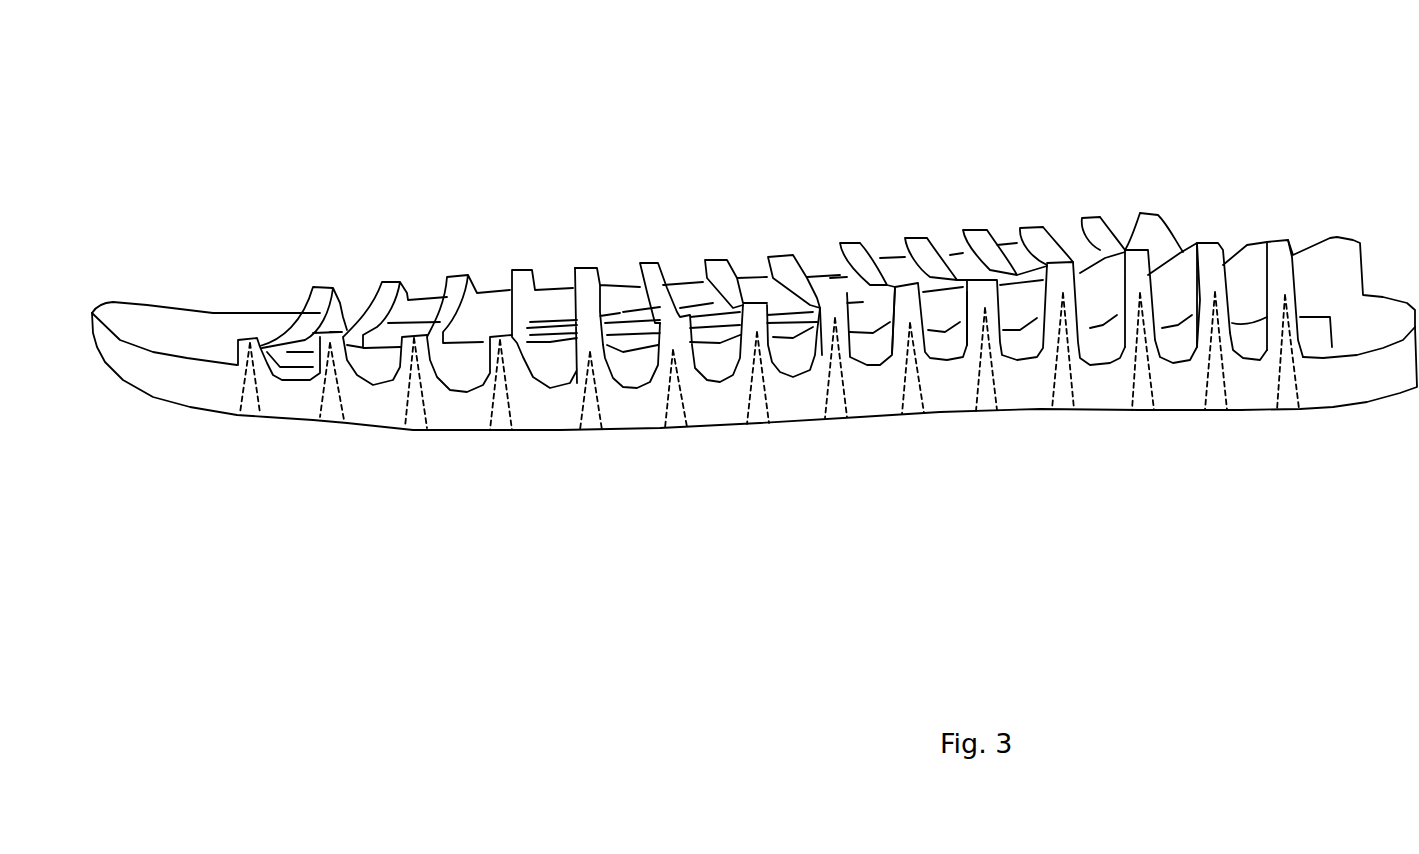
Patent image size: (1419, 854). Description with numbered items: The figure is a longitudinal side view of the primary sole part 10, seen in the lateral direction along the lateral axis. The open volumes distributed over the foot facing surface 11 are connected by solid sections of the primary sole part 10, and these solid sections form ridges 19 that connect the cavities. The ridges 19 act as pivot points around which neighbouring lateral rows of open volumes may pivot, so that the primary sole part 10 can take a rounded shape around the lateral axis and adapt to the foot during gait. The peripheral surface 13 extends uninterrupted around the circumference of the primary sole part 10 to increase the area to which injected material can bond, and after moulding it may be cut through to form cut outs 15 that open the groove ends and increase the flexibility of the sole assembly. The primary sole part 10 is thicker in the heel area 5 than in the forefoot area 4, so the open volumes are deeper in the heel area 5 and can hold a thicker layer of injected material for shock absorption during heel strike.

The forefoot area 4 is at (290, 510).
The heel area 5 is at (1217, 457).
The primary sole part 10 is at (1308, 45).
The foot facing surface 11 is at (175, 320).
The peripheral surface 13 is at (538, 400).
The cut outs 15 is at (405, 410).
The ridges 19 is at (653, 272).